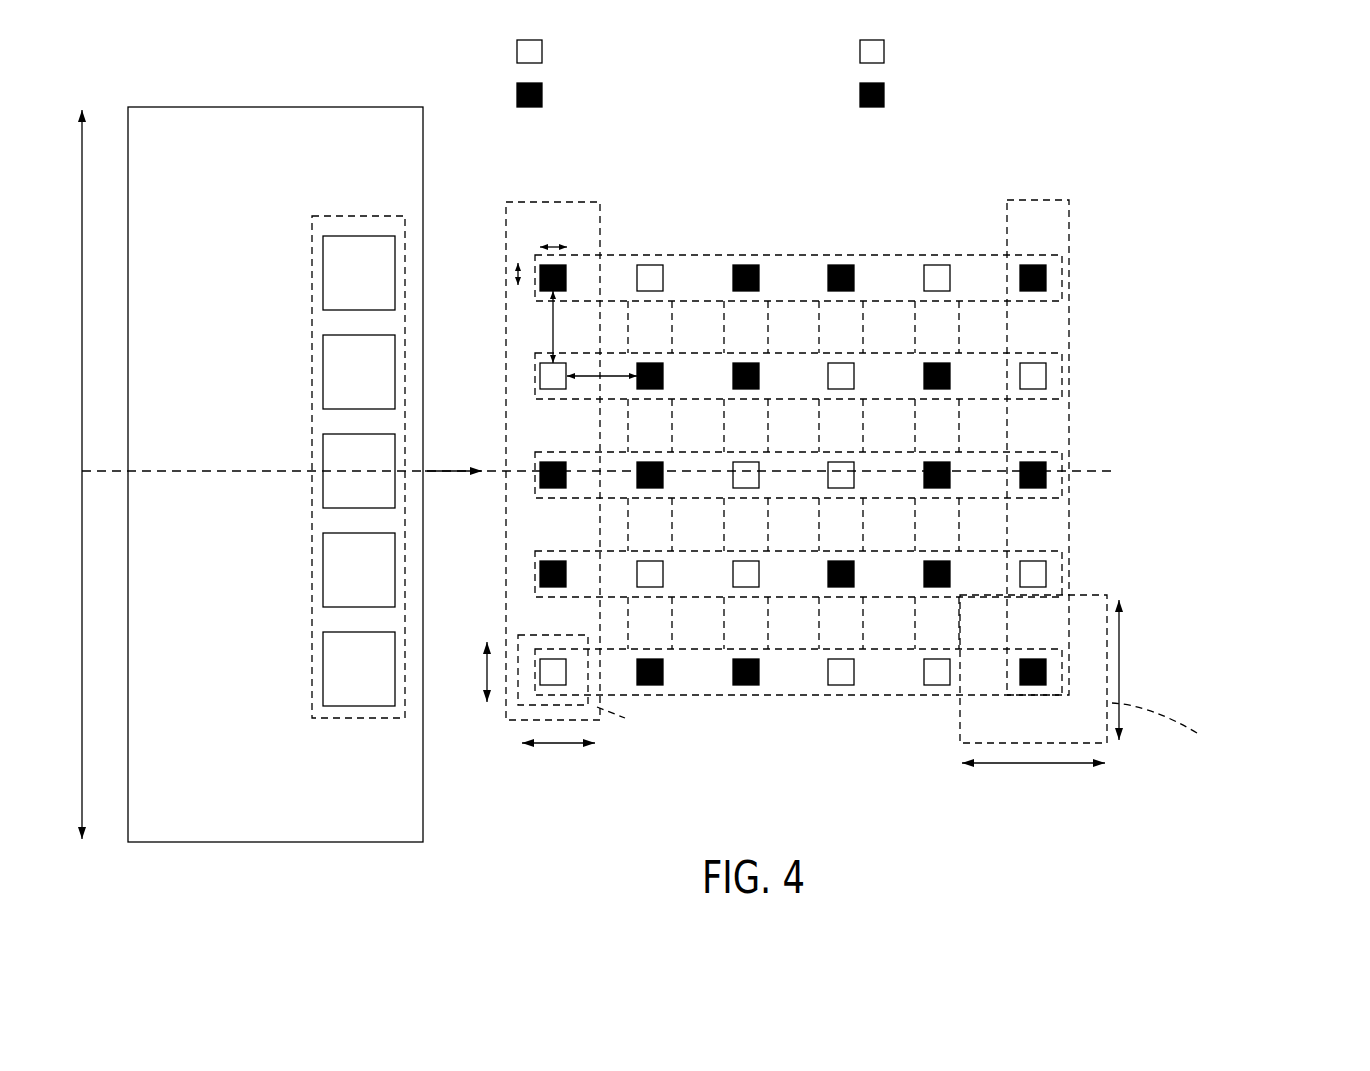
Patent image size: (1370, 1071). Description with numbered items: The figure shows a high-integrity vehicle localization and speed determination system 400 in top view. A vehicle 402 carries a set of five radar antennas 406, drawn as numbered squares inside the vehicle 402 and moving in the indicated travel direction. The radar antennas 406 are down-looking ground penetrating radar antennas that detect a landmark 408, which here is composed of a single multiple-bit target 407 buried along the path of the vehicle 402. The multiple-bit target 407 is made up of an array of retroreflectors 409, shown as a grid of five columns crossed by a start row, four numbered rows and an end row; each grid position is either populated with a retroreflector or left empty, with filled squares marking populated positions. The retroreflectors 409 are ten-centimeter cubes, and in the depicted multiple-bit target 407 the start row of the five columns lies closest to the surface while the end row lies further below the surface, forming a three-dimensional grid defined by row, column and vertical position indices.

The high-integrity vehicle localization and speed determination system 400 is at (492, 858).
The vehicle 402 is at (424, 800).
The radar antennas 406 is at (310, 253).
The multiple-bit target 407 is at (859, 789).
The landmark 408 is at (1108, 232).
The retroreflectors 409 is at (745, 362).